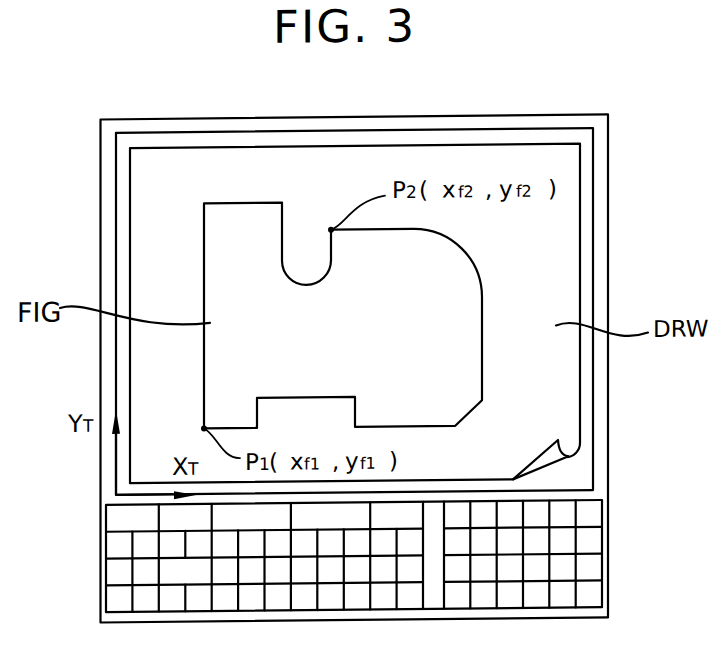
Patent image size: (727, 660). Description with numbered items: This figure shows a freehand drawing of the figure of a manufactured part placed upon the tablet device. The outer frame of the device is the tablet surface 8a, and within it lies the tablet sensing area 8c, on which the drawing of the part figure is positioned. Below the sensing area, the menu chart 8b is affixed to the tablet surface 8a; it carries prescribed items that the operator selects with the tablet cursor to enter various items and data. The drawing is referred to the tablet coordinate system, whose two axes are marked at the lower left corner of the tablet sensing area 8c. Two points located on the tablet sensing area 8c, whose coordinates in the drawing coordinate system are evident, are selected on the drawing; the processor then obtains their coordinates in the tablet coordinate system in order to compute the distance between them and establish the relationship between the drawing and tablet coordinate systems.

The tablet surface 8a is at (608, 183).
The menu chart 8b is at (588, 569).
The tablet sensing area 8c is at (583, 469).